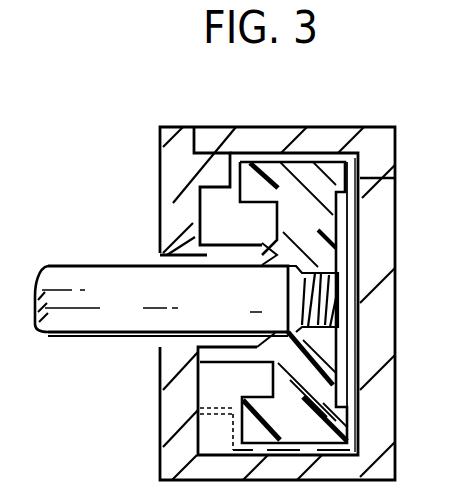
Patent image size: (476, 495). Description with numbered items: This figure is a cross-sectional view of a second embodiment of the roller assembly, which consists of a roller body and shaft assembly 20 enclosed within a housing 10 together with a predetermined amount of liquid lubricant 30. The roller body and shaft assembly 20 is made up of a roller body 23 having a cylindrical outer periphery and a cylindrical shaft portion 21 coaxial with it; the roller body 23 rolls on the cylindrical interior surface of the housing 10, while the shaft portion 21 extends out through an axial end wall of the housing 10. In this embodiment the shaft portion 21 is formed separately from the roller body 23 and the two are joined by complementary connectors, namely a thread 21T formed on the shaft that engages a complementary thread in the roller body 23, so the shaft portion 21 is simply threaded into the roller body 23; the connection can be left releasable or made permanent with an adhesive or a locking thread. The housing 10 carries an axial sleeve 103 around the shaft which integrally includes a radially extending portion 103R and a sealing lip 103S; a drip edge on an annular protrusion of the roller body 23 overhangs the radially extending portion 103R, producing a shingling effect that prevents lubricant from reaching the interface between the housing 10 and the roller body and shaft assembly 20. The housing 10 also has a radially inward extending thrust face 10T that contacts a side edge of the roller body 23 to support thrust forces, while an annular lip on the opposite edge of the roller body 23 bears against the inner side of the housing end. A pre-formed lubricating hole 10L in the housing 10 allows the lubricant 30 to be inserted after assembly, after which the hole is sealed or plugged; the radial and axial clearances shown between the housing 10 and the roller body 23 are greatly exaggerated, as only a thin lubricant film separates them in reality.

The housing 10 is at (378, 218).
The thrust face 10T is at (228, 169).
The lubricating hole 10L is at (396, 178).
The axial sleeve 103 is at (262, 270).
The radially extending portion 103R is at (268, 238).
The sealing lip 103S is at (270, 333).
The roller body and shaft assembly 20 is at (87, 336).
The shaft portion 21 is at (137, 314).
The thread 21T is at (350, 318).
The roller body 23 is at (310, 226).
The liquid lubricant 30 is at (356, 413).